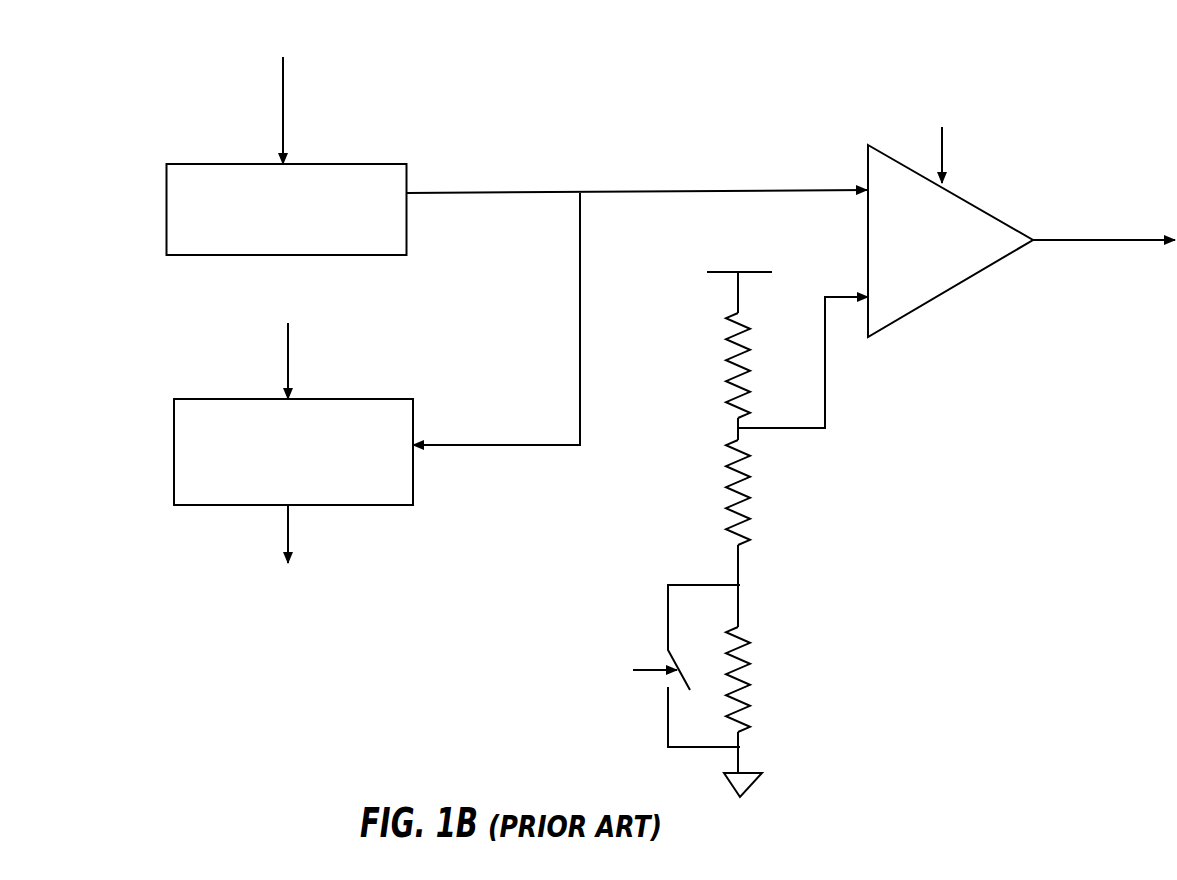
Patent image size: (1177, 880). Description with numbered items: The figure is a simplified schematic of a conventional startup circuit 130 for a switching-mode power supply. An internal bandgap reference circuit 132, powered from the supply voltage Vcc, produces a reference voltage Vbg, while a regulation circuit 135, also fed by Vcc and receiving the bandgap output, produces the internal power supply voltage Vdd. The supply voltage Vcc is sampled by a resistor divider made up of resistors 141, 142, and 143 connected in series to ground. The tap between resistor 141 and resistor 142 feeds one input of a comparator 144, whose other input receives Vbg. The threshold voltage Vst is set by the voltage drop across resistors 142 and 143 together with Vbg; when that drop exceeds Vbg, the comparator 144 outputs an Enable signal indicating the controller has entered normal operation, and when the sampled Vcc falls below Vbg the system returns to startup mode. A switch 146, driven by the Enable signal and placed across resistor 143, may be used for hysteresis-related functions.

The startup circuit 130 is at (1086, 55).
The bandgap reference circuit 132 is at (323, 162).
The regulation circuit 135 is at (355, 398).
The resistor 141 is at (727, 368).
The resistor 142 is at (727, 502).
The resistor 143 is at (752, 668).
The comparator 144 is at (983, 208).
The switch 146 is at (662, 635).